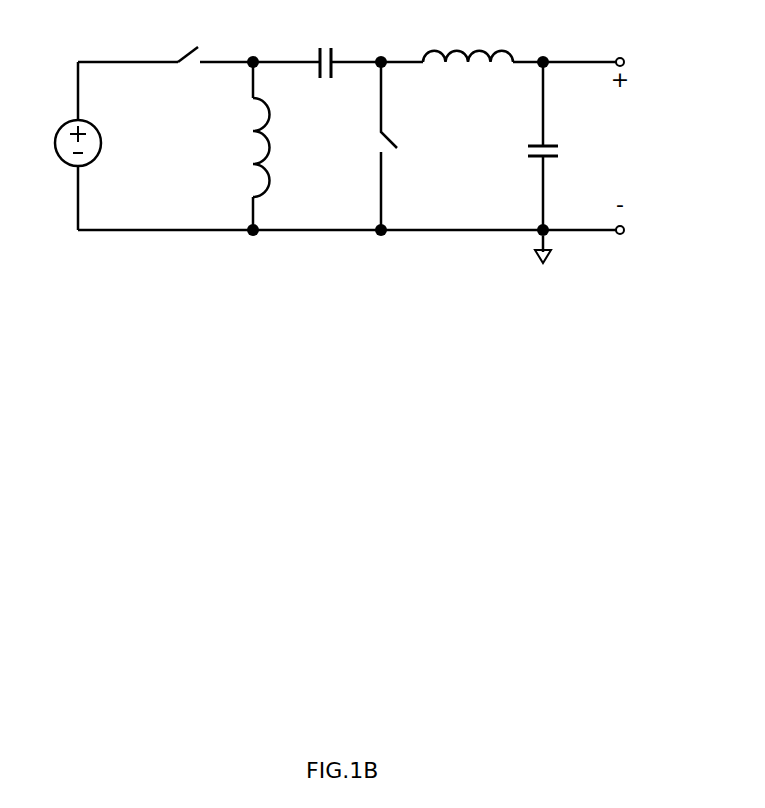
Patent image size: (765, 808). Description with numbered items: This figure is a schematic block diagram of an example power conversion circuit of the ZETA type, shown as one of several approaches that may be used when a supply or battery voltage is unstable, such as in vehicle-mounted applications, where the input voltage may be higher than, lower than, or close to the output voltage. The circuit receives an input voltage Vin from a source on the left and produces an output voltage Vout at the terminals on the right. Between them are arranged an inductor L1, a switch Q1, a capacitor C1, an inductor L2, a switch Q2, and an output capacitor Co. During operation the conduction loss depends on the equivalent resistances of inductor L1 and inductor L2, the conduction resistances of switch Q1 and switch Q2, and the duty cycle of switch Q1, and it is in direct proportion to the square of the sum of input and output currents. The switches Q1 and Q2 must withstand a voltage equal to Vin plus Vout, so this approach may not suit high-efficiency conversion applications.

The input voltage Vin is at (93, 143).
The switch Q1 is at (195, 41).
The inductor L1 is at (277, 147).
The capacitor C1 is at (325, 49).
The switch Q2 is at (407, 146).
The inductor L2 is at (468, 41).
The output capacitor Co is at (561, 150).
The output voltage Vout is at (646, 105).